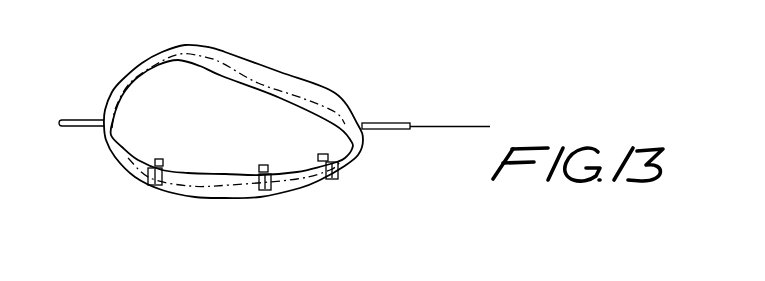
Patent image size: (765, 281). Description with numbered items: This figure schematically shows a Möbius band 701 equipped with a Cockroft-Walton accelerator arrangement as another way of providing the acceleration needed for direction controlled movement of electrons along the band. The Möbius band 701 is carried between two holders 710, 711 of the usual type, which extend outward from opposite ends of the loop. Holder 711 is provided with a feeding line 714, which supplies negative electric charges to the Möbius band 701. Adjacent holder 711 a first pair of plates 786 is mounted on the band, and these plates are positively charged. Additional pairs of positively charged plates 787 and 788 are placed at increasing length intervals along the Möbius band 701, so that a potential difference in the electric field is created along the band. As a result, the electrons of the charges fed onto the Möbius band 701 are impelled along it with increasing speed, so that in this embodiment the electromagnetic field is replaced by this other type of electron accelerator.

The Möbius band 701 is at (323, 87).
The holder 710 is at (73, 118).
The holder 711 is at (383, 122).
The feeding line 714 is at (443, 127).
The first pair of plates 786 is at (320, 158).
The pair of positively charged plates 787 is at (260, 167).
The pair of positively charged plates 788 is at (162, 160).